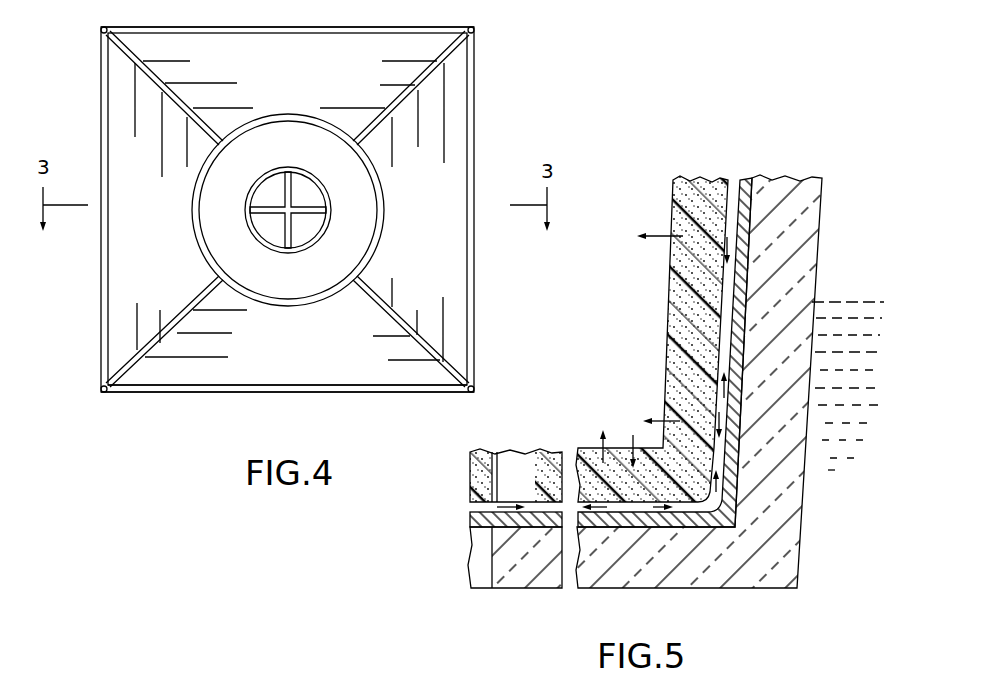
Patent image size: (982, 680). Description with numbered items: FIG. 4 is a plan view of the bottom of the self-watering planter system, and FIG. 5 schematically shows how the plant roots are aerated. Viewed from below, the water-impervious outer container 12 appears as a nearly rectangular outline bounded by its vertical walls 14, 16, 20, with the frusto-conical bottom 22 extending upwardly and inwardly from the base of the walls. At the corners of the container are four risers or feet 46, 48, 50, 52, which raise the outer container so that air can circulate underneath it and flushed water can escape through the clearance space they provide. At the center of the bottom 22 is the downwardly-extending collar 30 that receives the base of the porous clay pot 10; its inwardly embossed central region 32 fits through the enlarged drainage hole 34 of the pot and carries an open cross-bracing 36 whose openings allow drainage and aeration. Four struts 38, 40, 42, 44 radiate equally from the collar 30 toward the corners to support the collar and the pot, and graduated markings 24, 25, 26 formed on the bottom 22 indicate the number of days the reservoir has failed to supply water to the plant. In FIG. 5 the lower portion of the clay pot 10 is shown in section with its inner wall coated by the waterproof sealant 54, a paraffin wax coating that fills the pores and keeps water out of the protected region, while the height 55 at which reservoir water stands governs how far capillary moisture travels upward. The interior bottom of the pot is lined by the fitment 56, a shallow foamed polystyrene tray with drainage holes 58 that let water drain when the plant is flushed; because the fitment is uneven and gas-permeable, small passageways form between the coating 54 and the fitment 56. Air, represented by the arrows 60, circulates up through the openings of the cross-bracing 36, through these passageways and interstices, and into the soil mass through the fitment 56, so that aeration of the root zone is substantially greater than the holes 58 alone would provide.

In FIG. 5, the porous clay pot 10 is at (806, 438).
In FIG. 4, the water-impervious container 12 is at (481, 270).
In FIG. 4, the vertical wall 14 is at (477, 320).
In FIG. 4, the vertical wall 16 is at (356, 27).
In FIG. 4, the vertical wall 20 is at (283, 393).
In FIG. 4, the bottom 22 is at (336, 347).
In FIG. 4, the graduated marking 24 is at (232, 311).
In FIG. 4, the graduated marking 25 is at (203, 333).
In FIG. 4, the graduated marking 26 is at (165, 358).
In FIG. 4, the collar 30 is at (385, 213).
In FIG. 4, the central region 32 is at (303, 168).
In FIG. 4, the open cross-bracing 36 is at (276, 186).
In FIG. 4, the strut 38 is at (175, 317).
In FIG. 4, the strut 40 is at (397, 312).
In FIG. 4, the strut 42 is at (428, 82).
In FIG. 4, the strut 44 is at (185, 100).
In FIG. 4, the riser or foot 46 is at (102, 392).
In FIG. 4, the riser or foot 48 is at (474, 392).
In FIG. 4, the riser or foot 50 is at (476, 30).
In FIG. 4, the riser or foot 52 is at (101, 28).
In FIG. 5, the drainage hole 34 is at (480, 570).
In FIG. 5, the waterproof sealant coating 54 is at (745, 179).
In FIG. 5, the height 55 is at (850, 302).
In FIG. 5, the fitment 56 is at (686, 352).
In FIG. 5, the drainage holes 58 is at (516, 467).
In FIG. 5, the arrows 60 is at (723, 243).